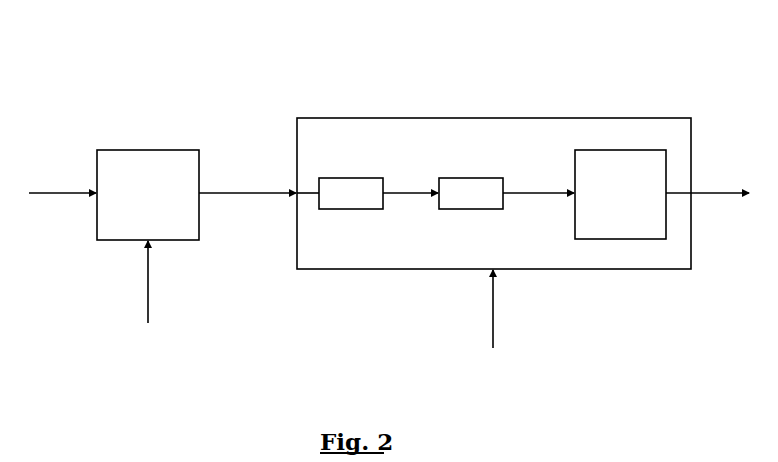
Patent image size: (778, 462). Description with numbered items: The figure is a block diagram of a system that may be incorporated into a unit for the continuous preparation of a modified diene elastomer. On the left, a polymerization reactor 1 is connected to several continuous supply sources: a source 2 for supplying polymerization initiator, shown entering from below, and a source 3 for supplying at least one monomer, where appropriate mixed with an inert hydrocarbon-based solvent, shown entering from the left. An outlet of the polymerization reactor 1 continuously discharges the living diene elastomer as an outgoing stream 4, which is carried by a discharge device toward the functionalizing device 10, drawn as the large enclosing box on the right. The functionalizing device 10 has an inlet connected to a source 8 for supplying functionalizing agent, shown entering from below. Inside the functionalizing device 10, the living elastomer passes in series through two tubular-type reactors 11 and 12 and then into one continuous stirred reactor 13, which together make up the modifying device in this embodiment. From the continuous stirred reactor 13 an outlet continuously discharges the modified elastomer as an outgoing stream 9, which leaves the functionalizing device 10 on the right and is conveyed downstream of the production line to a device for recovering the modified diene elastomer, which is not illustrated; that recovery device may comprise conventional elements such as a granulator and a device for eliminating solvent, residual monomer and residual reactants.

The polymerization reactor 1 is at (148, 150).
The source for supplying polymerization initiator 2 is at (148, 282).
The source for supplying at least one monomer 3 is at (72, 190).
The outgoing stream of living diene elastomer 4 is at (260, 192).
The source for supplying functionalizing agent 8 is at (493, 295).
The outgoing stream of modified elastomer 9 is at (731, 192).
The functionalizing device 10 is at (492, 118).
The tubular-type reactor 11 is at (352, 178).
The tubular-type reactor 12 is at (470, 178).
The continuous stirred reactor 13 is at (619, 150).